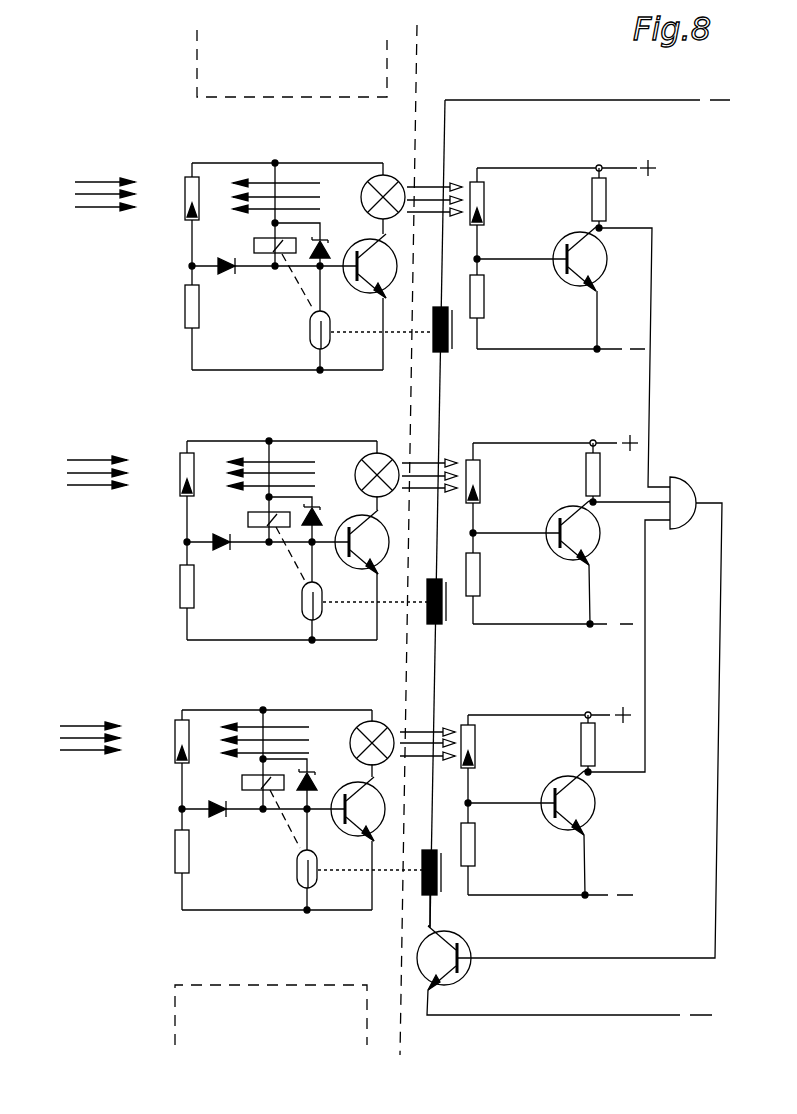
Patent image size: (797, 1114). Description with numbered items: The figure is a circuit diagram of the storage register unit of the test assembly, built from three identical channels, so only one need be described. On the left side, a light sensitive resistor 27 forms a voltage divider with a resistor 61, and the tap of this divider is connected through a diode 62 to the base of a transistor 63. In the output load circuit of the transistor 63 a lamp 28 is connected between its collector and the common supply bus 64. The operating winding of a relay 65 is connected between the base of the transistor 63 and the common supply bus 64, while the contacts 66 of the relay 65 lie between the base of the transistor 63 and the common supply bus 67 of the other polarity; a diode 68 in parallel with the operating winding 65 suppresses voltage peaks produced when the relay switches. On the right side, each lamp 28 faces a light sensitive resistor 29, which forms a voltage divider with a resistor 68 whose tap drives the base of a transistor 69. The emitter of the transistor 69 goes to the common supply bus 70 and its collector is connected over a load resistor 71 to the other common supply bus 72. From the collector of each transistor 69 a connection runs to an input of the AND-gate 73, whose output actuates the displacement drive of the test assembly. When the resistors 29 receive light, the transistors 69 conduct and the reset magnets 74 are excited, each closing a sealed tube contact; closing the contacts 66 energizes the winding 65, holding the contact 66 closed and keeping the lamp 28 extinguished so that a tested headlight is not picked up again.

The light sensitive resistor 27 is at (193, 195).
The lamp 28 is at (369, 198).
The light sensitive resistor 29 is at (487, 197).
The resistor 61 is at (184, 305).
The diode 62 is at (223, 275).
The transistor 63 is at (380, 288).
The common supply bus 64 is at (317, 163).
The relay 65 is at (254, 243).
The relay contacts 66 is at (310, 336).
The common supply bus 67 is at (253, 371).
The diode 68 is at (327, 253).
The transistor 69 is at (599, 265).
The common supply bus 70 is at (538, 351).
The load resistor 71 is at (603, 203).
The common supply bus 72 is at (560, 166).
The AND-gate 73 is at (693, 478).
The reset magnet 74 is at (450, 343).